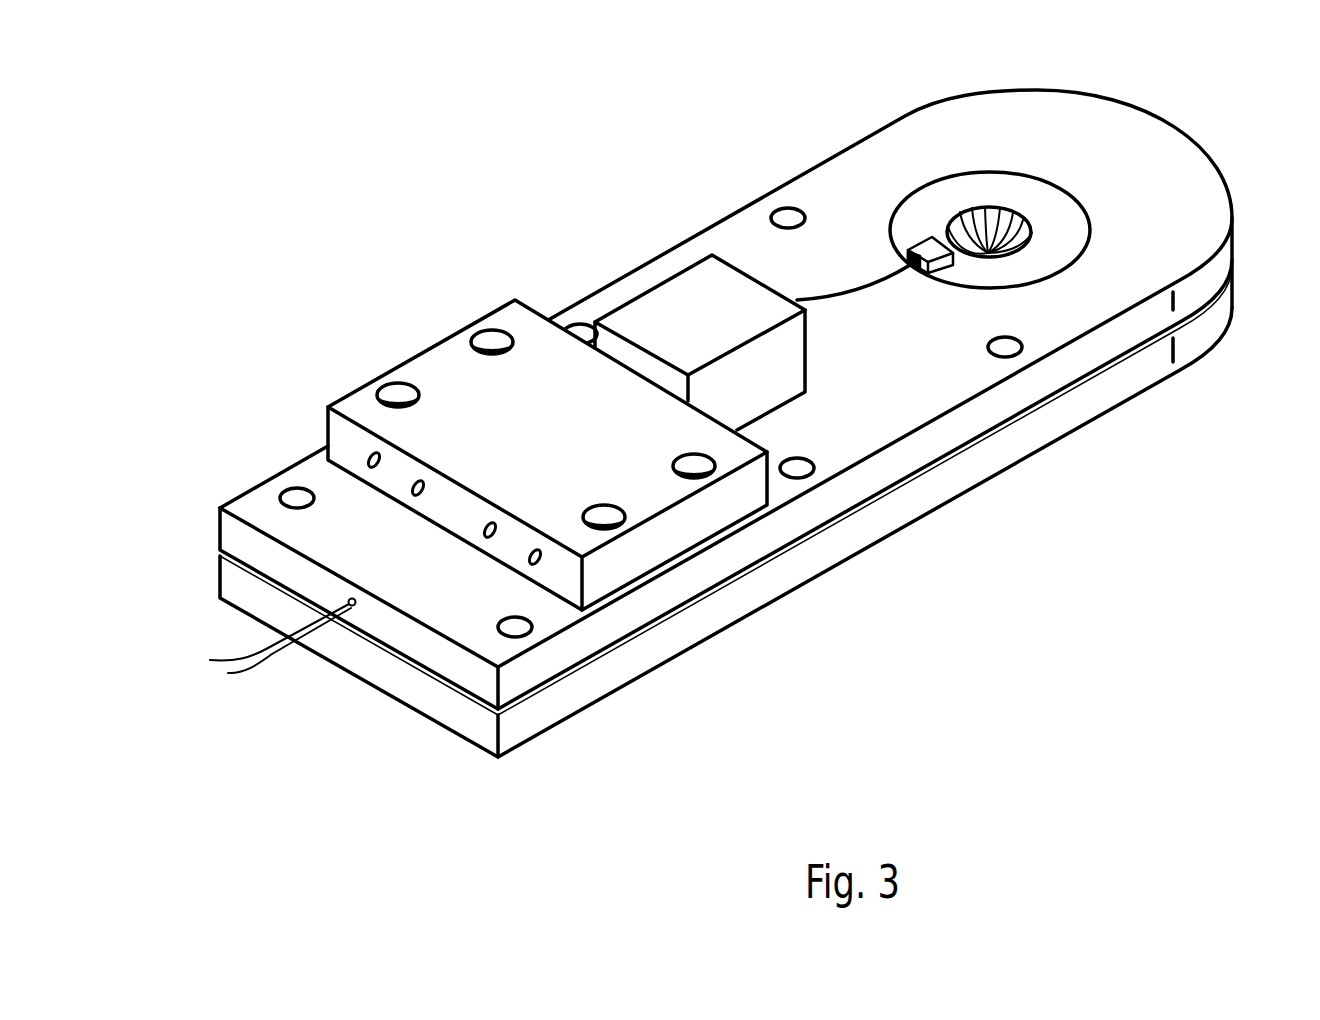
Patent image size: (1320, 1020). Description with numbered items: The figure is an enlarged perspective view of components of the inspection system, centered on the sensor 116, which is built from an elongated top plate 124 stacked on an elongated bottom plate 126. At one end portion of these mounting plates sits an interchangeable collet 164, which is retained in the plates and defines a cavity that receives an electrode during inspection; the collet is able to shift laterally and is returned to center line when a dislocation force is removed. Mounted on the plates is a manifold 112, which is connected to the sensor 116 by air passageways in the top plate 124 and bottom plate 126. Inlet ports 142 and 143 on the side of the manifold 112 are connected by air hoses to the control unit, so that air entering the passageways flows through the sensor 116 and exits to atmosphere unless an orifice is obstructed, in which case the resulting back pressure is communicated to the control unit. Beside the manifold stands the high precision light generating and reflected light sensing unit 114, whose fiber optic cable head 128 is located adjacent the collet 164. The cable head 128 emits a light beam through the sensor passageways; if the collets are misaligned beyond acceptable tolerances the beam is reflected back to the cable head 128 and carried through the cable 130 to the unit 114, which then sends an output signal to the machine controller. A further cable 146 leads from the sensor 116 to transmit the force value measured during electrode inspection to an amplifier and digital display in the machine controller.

The manifold 112 is at (437, 368).
The light generating and reflected light sensing unit 114 is at (655, 315).
The sensor 116 is at (758, 240).
The top plate 124 is at (795, 520).
The bottom plate 126 is at (695, 628).
The light generating and reflected light cable head 128 is at (918, 242).
The cable 130 is at (883, 287).
The inlet port 142 is at (413, 490).
The inlet port 143 is at (487, 532).
The cable 146 is at (250, 665).
The collet 164 is at (1058, 207).